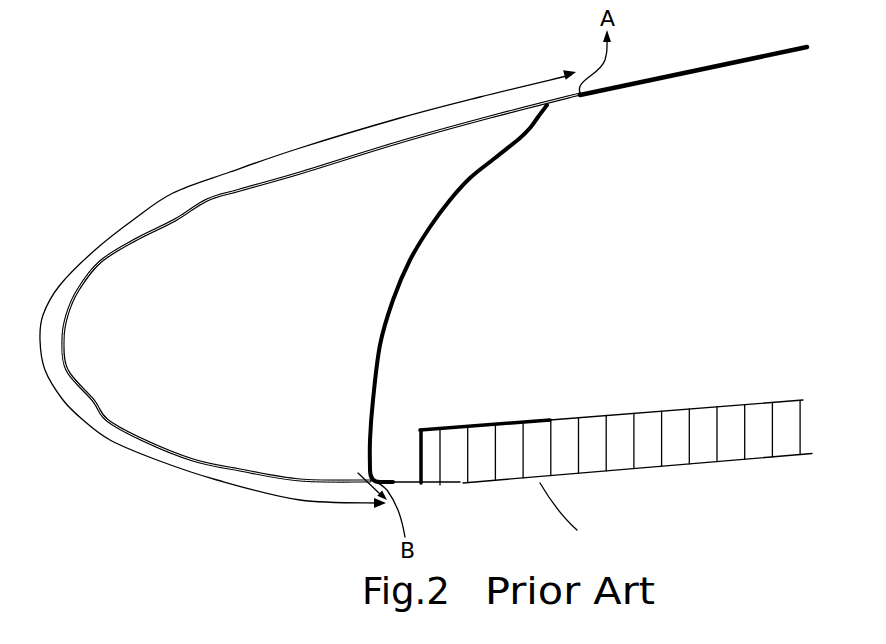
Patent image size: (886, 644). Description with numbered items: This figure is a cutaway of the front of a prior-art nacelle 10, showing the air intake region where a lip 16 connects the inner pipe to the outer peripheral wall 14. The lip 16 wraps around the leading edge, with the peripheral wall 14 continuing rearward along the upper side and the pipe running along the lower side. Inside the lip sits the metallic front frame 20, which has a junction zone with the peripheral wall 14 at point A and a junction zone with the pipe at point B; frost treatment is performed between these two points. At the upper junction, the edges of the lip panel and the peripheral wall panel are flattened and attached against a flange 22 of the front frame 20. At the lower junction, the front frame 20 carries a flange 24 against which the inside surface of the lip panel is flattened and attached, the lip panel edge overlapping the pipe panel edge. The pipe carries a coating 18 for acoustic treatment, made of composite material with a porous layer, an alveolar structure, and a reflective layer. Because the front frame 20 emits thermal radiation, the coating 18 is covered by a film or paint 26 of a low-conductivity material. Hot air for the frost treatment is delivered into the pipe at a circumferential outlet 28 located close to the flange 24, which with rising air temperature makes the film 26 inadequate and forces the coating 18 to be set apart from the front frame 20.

The nacelle 10 is at (148, 149).
The peripheral wall 14 is at (688, 66).
The lip 16 is at (310, 3).
The coating for acoustic treatment 18 is at (697, 443).
The front frame 20 is at (393, 297).
The flange 22 is at (577, 103).
The flange 24 is at (394, 482).
The film or paint 26 is at (480, 425).
The circumferential outlet 28 is at (372, 482).